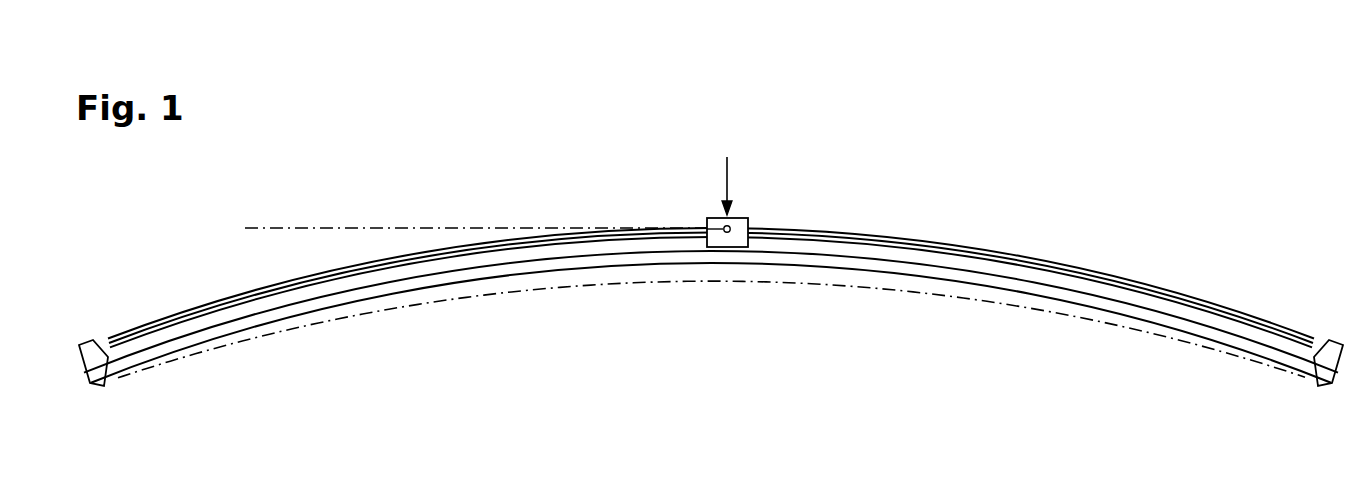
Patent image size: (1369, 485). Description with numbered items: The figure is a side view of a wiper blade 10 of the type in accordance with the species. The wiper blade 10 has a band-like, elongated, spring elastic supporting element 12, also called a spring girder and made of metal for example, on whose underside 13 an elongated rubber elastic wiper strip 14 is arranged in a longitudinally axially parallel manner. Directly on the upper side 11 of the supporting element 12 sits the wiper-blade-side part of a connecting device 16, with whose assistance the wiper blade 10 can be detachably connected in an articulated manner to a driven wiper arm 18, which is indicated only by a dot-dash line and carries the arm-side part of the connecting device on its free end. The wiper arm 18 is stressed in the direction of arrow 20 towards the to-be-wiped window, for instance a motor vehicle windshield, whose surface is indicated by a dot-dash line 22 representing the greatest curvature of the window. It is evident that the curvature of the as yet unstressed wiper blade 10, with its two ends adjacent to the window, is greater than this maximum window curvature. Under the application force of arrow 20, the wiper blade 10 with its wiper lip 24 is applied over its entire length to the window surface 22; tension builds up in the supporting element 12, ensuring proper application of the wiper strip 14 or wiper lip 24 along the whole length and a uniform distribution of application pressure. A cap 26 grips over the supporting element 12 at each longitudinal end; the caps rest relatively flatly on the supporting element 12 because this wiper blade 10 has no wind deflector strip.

The wiper blade 10 is at (1052, 248).
The upper side 11 is at (1163, 290).
The supporting element 12 is at (1115, 272).
The underside 13 is at (1152, 294).
The wiper strip 14 is at (441, 277).
The connecting device 16 is at (749, 228).
The wiper arm 18 is at (327, 227).
The arrow 20 is at (729, 172).
The dot-dash line 22 is at (728, 285).
The wiper lip 24 is at (946, 274).
The cap 26 is at (100, 352).